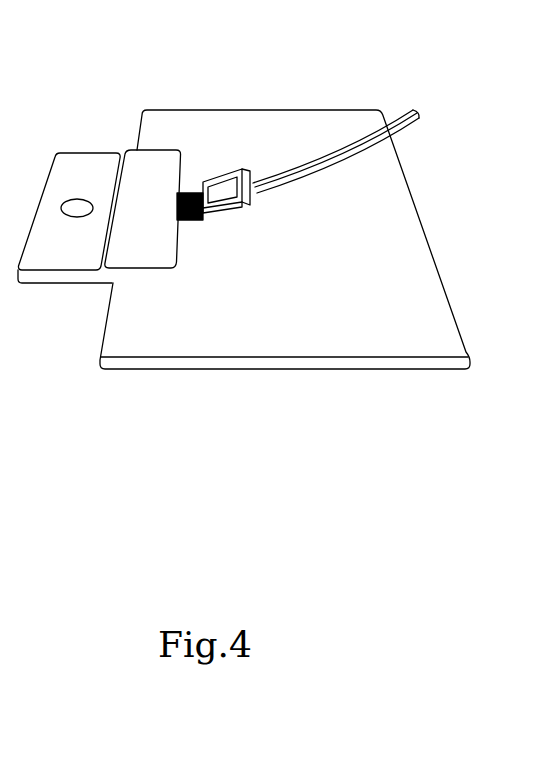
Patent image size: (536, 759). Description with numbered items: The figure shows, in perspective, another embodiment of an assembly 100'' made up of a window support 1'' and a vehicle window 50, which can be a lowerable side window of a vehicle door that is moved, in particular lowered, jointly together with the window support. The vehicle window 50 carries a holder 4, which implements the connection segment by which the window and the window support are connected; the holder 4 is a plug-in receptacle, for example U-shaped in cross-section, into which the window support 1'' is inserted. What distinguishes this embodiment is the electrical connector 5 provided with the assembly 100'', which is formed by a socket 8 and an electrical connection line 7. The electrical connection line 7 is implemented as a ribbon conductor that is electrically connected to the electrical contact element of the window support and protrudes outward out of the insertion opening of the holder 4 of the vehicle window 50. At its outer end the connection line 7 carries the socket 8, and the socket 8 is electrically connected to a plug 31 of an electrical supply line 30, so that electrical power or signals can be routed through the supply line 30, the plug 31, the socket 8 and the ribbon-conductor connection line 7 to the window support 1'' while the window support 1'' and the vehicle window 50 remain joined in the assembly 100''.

The assembly 100'' is at (244, 209).
The window support 1'' is at (77, 161).
The holder 4 is at (138, 283).
The electrical connector 5 is at (208, 173).
The electrical connection line 7 is at (193, 223).
The socket 8 is at (223, 219).
The electrical supply line 30 is at (308, 166).
The plug 31 is at (251, 212).
The vehicle window 50 is at (323, 141).